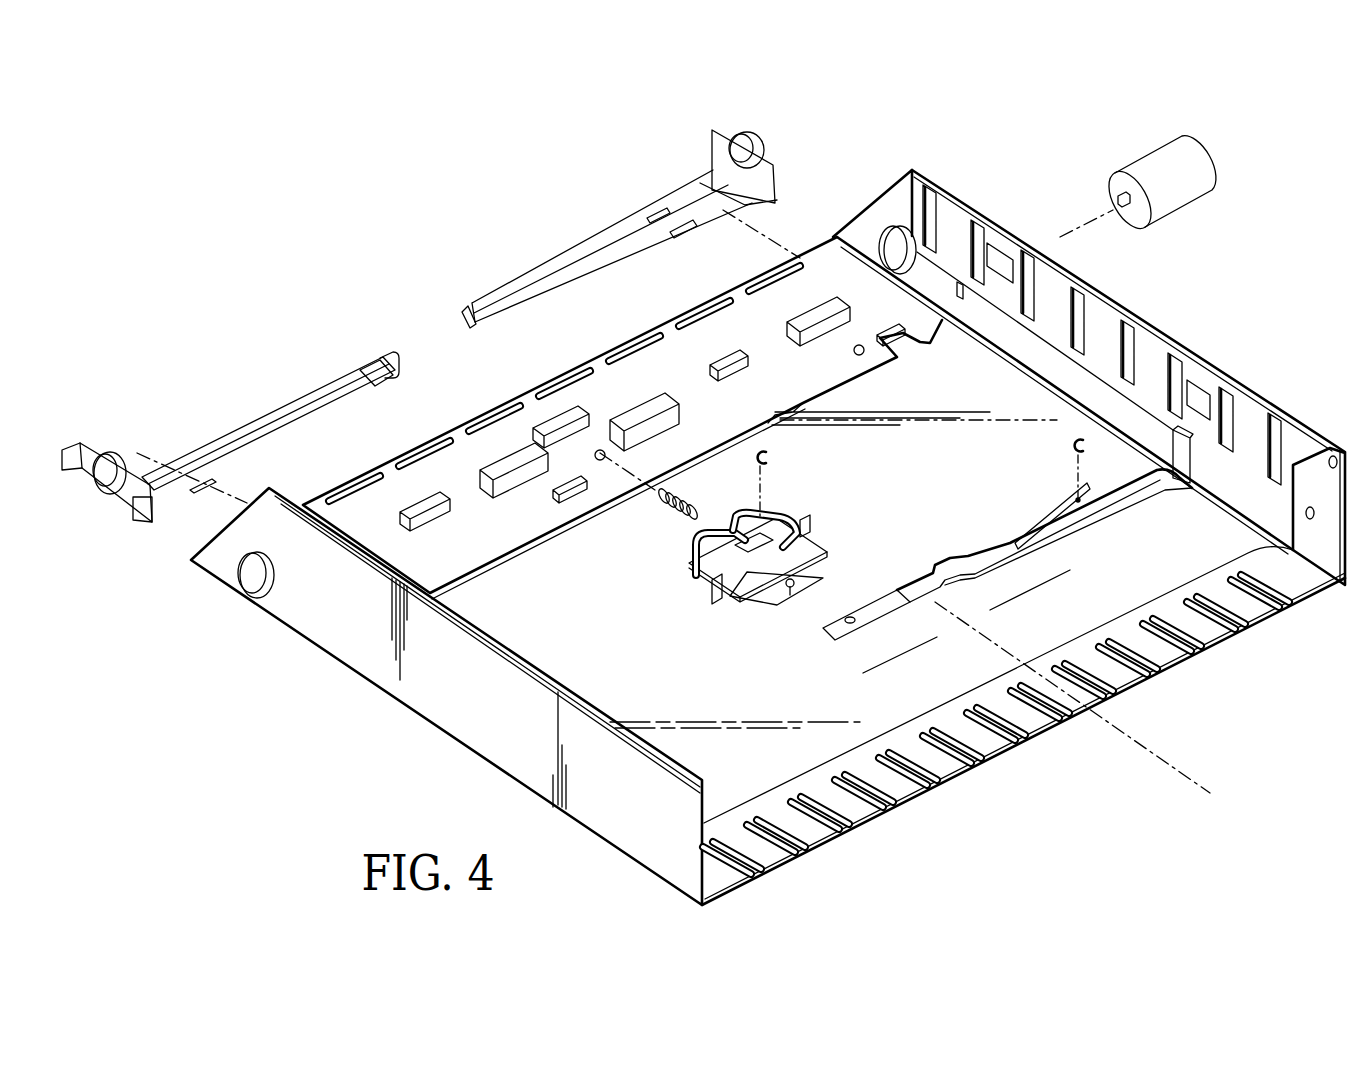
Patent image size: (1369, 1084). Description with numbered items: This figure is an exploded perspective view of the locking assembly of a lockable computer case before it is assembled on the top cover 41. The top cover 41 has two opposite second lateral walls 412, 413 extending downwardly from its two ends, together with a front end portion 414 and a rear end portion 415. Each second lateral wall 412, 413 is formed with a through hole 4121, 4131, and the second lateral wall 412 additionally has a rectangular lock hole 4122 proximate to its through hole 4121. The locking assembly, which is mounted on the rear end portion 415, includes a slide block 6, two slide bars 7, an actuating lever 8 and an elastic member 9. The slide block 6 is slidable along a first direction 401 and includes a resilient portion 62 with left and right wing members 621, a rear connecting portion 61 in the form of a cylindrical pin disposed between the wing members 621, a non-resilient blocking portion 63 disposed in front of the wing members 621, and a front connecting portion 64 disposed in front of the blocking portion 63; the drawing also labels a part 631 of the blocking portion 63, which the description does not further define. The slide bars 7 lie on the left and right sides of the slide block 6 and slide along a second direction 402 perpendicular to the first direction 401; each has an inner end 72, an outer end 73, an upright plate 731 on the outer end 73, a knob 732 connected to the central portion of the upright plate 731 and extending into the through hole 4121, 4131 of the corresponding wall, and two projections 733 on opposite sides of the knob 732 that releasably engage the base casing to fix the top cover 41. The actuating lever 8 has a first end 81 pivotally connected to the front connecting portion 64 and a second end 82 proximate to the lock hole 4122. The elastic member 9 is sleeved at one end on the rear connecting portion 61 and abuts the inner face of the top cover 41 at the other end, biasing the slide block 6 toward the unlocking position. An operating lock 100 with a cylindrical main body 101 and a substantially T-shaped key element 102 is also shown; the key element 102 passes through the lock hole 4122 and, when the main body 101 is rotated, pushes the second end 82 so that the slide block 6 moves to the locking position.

The operating lock 100 is at (1209, 165).
The cylindrical main body 101 is at (1197, 190).
The key element 102 is at (1112, 195).
The top cover 41 is at (1222, 560).
The first direction 401 is at (1180, 785).
The second direction 402 is at (930, 645).
The second lateral wall 412 is at (1097, 318).
The through hole 4121 is at (888, 228).
The lock hole 4122 is at (958, 282).
The second lateral wall 413 is at (348, 655).
The through hole 4131 is at (252, 592).
The front end portion 414 is at (1320, 585).
The rear end portion 415 is at (453, 440).
The slide block 6 is at (828, 561).
The rear connecting portion 61 is at (717, 525).
The resilient portion 62 is at (765, 515).
The wing members 621 is at (778, 520).
The non-resilient blocking portion 63 is at (812, 547).
The base plate leg 631 is at (800, 525).
The front connecting portion 64 is at (790, 592).
The slide bars 7 is at (444, 339).
The inner end 72 is at (385, 357).
The outer end 73 is at (444, 339).
The upright plate 731 is at (123, 503).
The knob 732 is at (122, 455).
The projections 733 is at (73, 470).
The actuating lever 8 is at (990, 483).
The first end 81 is at (830, 640).
The second end 82 is at (1175, 428).
The elastic member 9 is at (648, 514).